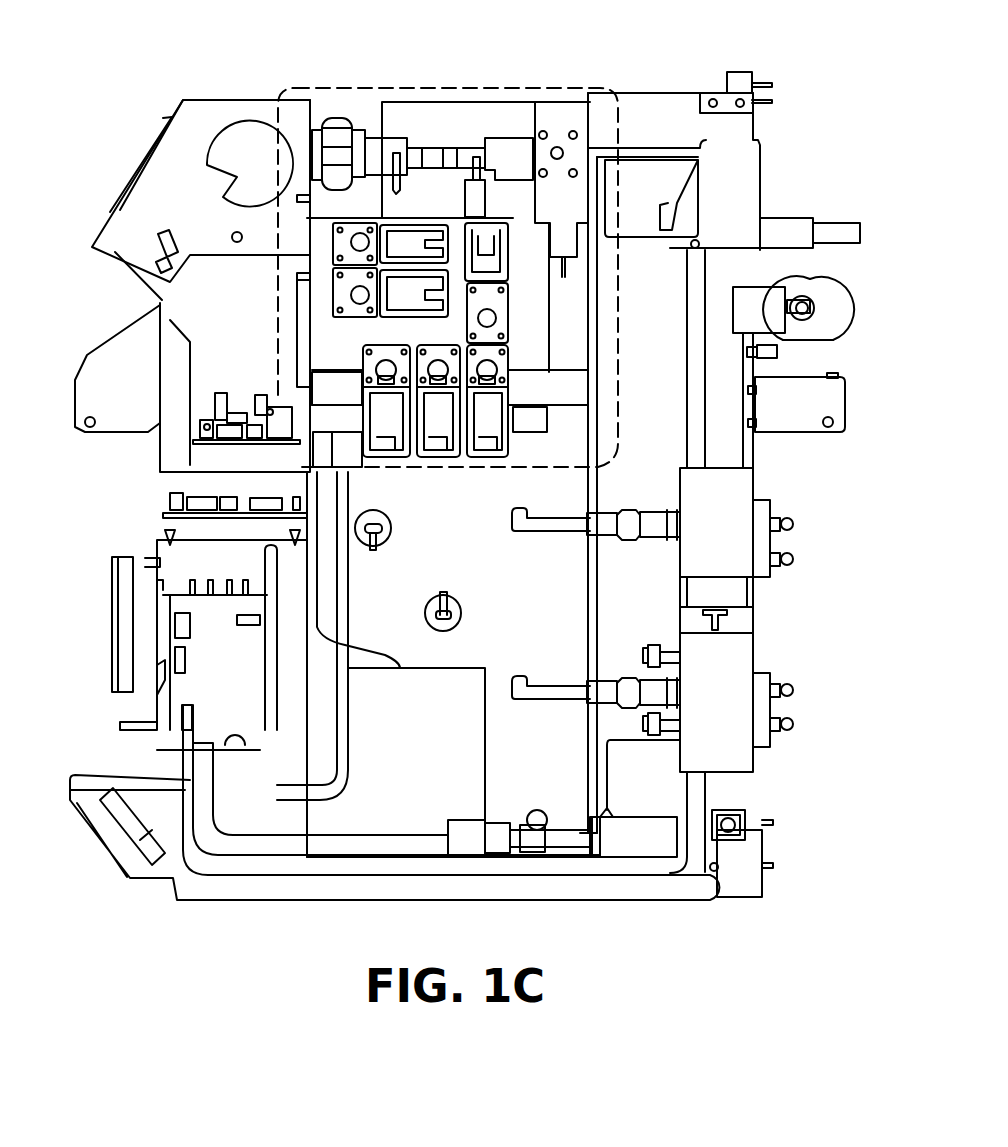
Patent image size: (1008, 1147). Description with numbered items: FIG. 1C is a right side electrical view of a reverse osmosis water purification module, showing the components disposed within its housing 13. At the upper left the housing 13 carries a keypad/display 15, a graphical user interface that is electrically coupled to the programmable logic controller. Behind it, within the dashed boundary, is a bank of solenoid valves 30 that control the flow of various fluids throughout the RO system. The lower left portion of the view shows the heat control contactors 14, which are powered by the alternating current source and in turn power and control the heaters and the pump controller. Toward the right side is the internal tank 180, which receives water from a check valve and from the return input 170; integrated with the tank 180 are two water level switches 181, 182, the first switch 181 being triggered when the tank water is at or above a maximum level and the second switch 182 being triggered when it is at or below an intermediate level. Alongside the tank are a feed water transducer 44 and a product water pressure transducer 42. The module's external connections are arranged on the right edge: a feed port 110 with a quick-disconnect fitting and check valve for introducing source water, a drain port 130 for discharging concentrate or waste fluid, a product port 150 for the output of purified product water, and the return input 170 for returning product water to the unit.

The housing 13 is at (227, 95).
The keypad/display (GUI) 15 is at (116, 182).
The solenoid valves 30 is at (270, 302).
The heat control contactors 14 is at (234, 852).
The feed water transducer 44 is at (660, 530).
The product water pressure transducer 42 is at (660, 695).
The feed port 110 is at (794, 524).
The drain port 130 is at (794, 559).
The product port 150 is at (794, 690).
The return input 170 is at (794, 724).
The internal tank 180 is at (542, 575).
The water level switch (LS1) 181 is at (402, 525).
The water level switch (LS2) 182 is at (474, 606).